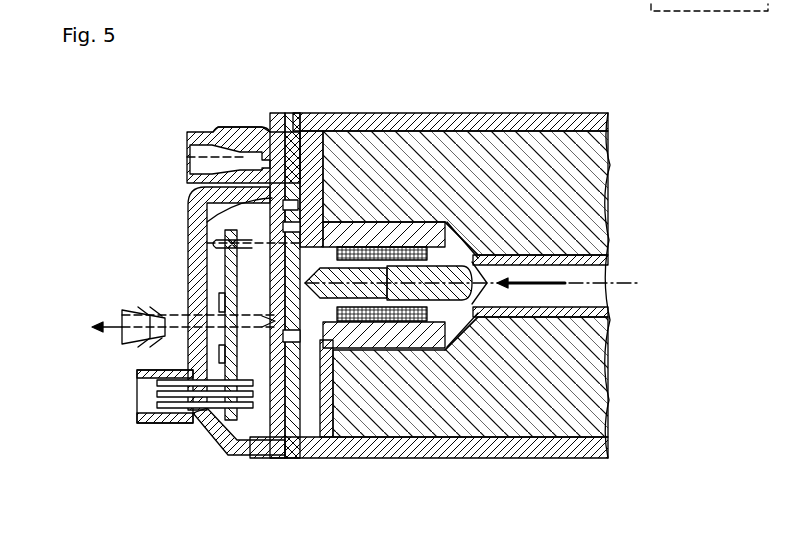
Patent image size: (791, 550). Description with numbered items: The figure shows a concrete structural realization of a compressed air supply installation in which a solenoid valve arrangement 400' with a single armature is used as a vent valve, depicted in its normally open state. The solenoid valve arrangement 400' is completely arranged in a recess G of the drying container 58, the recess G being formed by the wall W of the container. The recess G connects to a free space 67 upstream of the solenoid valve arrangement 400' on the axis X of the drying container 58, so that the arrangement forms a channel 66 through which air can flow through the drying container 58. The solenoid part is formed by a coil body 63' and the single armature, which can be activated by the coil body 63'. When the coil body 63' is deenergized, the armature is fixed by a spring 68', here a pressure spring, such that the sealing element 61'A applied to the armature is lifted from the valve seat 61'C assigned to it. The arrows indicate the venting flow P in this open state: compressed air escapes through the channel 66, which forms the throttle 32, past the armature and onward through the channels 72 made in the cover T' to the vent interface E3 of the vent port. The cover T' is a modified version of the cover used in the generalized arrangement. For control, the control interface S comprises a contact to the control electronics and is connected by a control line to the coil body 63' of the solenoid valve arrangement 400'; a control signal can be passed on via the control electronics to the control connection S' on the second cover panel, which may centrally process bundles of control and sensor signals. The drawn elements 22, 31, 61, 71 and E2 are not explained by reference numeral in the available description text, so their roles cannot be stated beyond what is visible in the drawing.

The housing 22 is at (510, 113).
The bottom plate 31 is at (322, 458).
The throttle 32 is at (498, 325).
The drying container 58 is at (612, 132).
The valve insert 61 is at (465, 193).
The sealing element 61'A is at (470, 377).
The valve seat 61'C is at (431, 325).
The coil body 63' is at (374, 237).
The channel 66 is at (478, 275).
The free space 67 is at (595, 296).
The spring 68' is at (384, 268).
The intermediate wall 71 is at (293, 115).
The channels 72 is at (190, 237).
The solenoid valve arrangement 400' is at (468, 250).
The second inlet E2 is at (188, 152).
The vent interface E3 is at (130, 310).
The recess G is at (465, 248).
The venting flow P is at (545, 262).
The control interface S is at (214, 325).
The control connection S' is at (168, 423).
The cover T' is at (241, 87).
The wall W is at (357, 113).
The axis X is at (625, 283).